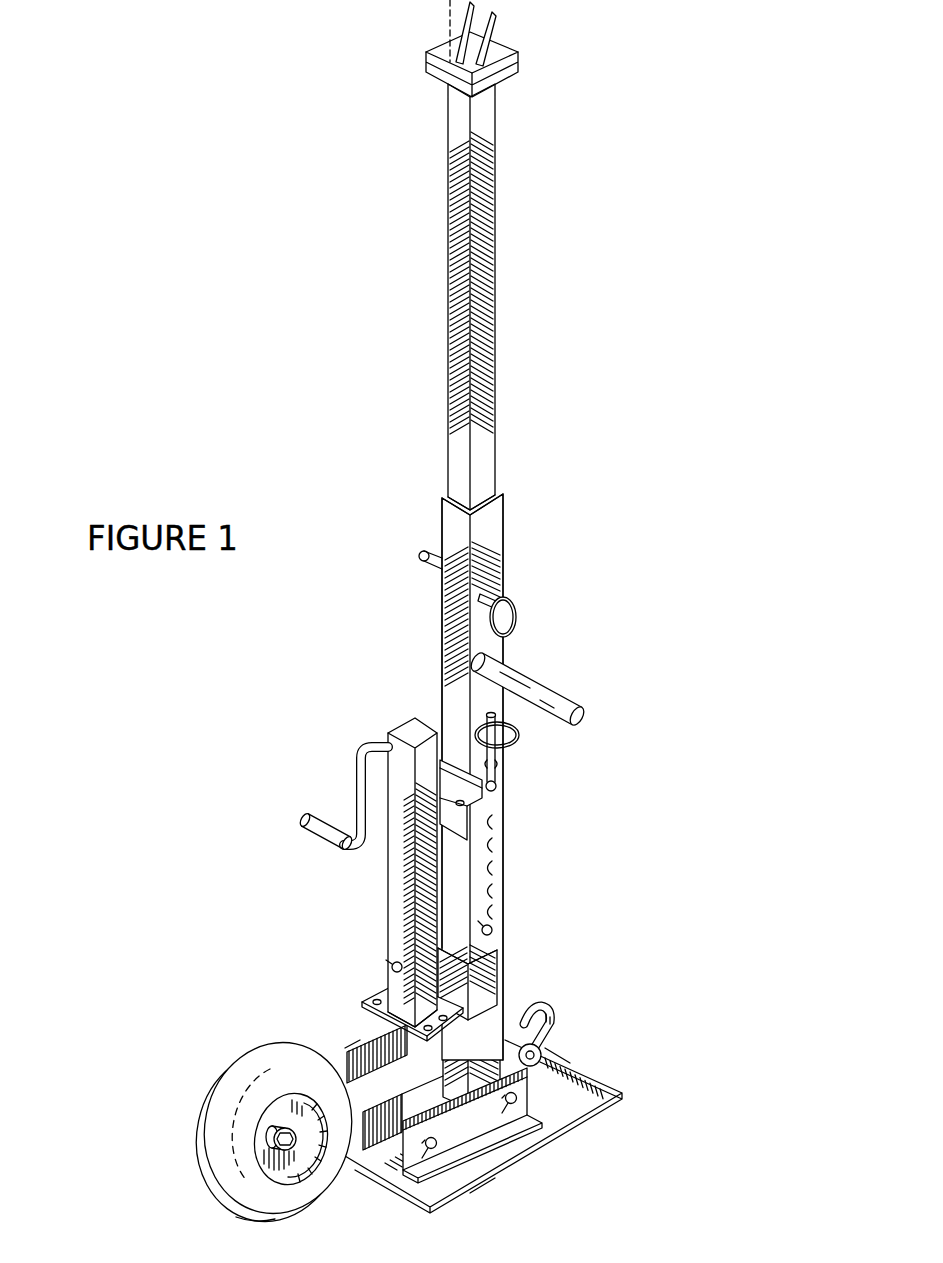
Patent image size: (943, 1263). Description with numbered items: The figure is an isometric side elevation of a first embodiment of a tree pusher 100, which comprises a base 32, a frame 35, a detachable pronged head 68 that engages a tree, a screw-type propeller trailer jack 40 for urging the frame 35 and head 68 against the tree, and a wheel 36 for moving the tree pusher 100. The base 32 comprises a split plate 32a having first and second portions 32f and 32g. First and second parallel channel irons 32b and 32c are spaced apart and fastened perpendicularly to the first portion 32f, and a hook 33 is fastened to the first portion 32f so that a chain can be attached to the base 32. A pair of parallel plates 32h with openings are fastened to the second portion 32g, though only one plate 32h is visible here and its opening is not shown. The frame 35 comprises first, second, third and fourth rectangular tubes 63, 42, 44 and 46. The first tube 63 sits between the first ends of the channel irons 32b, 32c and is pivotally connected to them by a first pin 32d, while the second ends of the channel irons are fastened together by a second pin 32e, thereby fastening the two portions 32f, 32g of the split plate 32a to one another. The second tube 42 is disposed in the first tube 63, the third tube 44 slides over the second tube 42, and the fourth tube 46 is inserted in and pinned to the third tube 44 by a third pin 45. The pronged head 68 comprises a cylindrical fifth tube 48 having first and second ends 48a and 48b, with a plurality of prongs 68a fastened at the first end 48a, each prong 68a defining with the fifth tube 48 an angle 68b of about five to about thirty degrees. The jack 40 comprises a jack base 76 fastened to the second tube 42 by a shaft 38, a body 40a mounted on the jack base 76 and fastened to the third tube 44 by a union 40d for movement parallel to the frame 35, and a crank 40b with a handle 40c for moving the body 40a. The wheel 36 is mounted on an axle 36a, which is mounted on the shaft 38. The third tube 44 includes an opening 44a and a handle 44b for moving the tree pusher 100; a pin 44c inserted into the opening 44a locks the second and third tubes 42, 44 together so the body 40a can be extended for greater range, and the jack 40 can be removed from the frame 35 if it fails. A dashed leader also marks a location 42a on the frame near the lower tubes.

The tree pusher 100 is at (432, 337).
The frame 35 is at (633, 417).
The base 32 is at (705, 978).
The split plate 32a is at (594, 1122).
The first channel iron 32b is at (530, 1118).
The second channel iron 32c is at (365, 1140).
The first pin 32d is at (517, 1095).
The second pin 32e is at (438, 1147).
The first portion of split plate 32f is at (557, 1052).
The second portion of split plate 32g is at (487, 1190).
The parallel plates 32h is at (250, 1213).
The hook 33 is at (561, 1033).
The wheel 36 is at (217, 1105).
The axle 36a is at (286, 1146).
The shaft 38 is at (353, 1053).
The screw-type propeller trailer jack 40 is at (384, 941).
The body 40a is at (386, 903).
The crank 40b is at (355, 760).
The handle 40c is at (305, 830).
The union 40d is at (482, 794).
The second tube 42 is at (503, 958).
The hole 42a is at (484, 822).
The third tube 44 is at (502, 638).
The opening 44a is at (494, 926).
The handle 44b is at (563, 696).
The pin 44c is at (500, 752).
The third pin 45 is at (486, 600).
The fourth tube 46 is at (495, 330).
The fifth tube 48 is at (490, 190).
The first end of fifth tube 48a is at (490, 124).
The second end of fifth tube 48b is at (488, 238).
The first tube 63 is at (500, 1022).
The detachable pronged head 68 is at (536, 52).
The prongs 68a is at (486, 4).
The angle 68b is at (448, 13).
The jack base 76 is at (363, 1003).